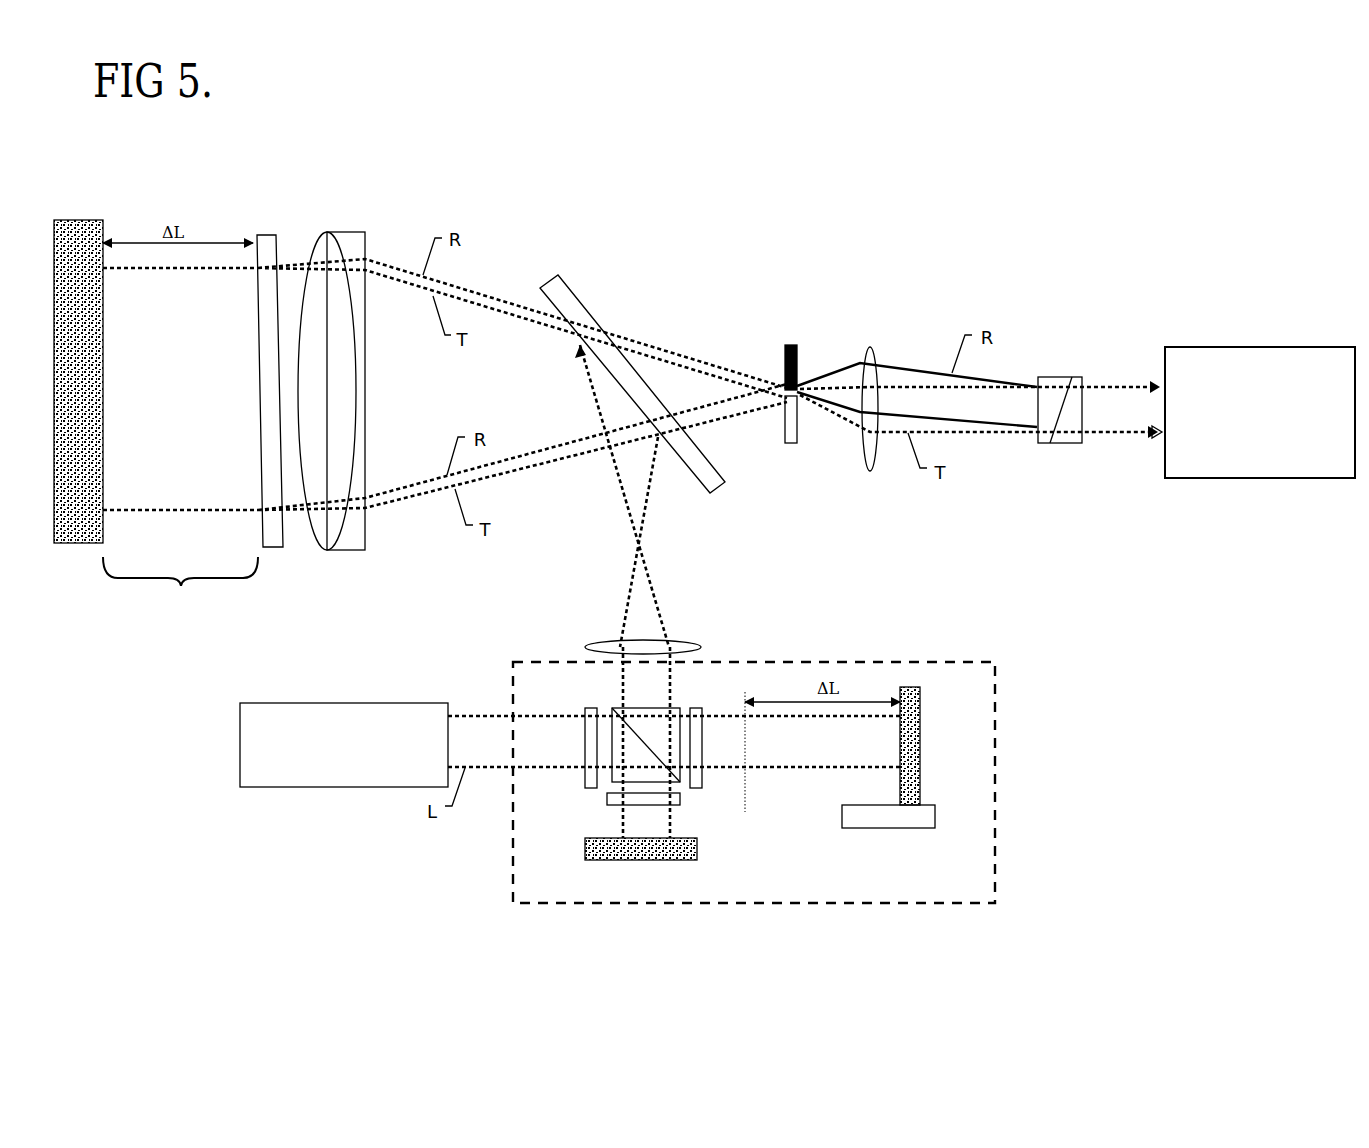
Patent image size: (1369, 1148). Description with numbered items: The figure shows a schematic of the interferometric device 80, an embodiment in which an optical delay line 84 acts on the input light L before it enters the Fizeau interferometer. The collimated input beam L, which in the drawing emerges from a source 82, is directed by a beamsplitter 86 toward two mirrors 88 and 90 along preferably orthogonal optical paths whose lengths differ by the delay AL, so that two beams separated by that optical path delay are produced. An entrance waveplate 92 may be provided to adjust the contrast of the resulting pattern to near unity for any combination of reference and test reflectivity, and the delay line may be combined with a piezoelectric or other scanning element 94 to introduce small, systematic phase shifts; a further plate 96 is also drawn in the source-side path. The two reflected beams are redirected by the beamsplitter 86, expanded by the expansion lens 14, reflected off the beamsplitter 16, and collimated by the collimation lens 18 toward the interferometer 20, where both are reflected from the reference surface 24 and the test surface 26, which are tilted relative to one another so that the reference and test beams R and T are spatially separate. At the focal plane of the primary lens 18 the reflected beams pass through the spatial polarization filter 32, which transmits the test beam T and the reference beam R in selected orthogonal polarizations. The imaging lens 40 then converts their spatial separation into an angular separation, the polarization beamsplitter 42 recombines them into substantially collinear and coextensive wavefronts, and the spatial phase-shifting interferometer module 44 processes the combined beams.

The expansion lens 14 is at (701, 647).
The beamsplitter 16 is at (562, 277).
The collimation lens 18 is at (365, 232).
The interferometer 20 is at (180, 591).
The reference surface 24 is at (260, 235).
The test surface 26 is at (103, 220).
The spatial polarization filter 32 is at (797, 345).
The imaging lens 40 is at (872, 355).
The polarization beamsplitter 42 is at (1053, 443).
The spatial phase-shifting interferometer module 44 is at (1200, 478).
The interferometric device 80 is at (713, 204).
The light source 82 is at (278, 787).
The optical delay line 84 is at (585, 903).
The beamsplitter 86 is at (615, 716).
The mirror 88 is at (698, 845).
The mirror 90 is at (922, 702).
The entrance waveplate 92 is at (585, 770).
The scanning element 94 is at (678, 798).
The plate 96 is at (703, 708).